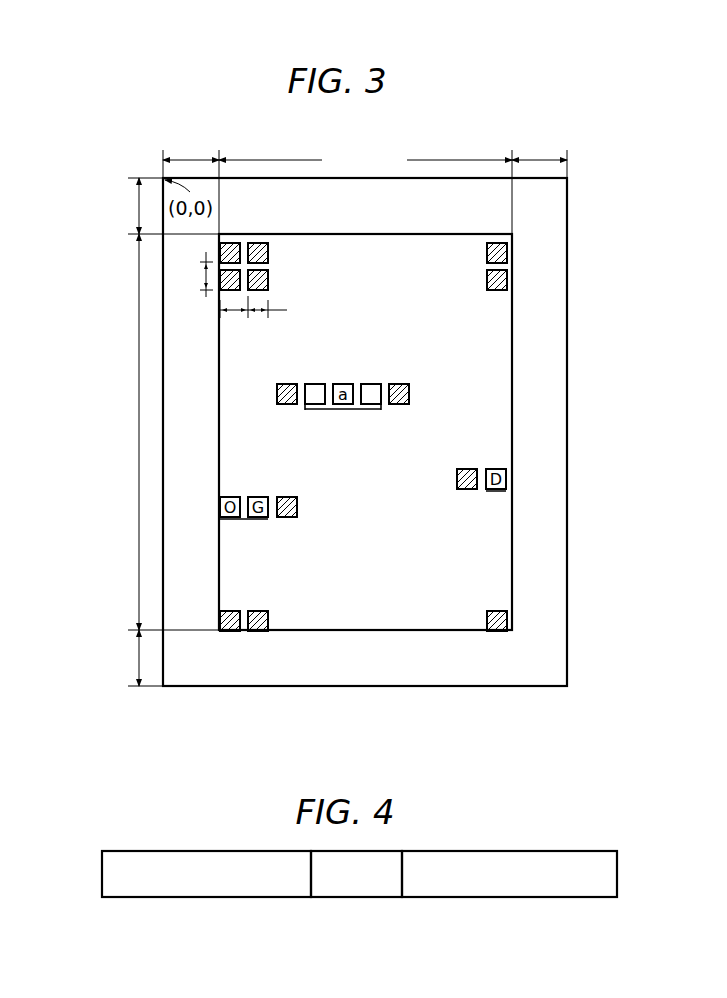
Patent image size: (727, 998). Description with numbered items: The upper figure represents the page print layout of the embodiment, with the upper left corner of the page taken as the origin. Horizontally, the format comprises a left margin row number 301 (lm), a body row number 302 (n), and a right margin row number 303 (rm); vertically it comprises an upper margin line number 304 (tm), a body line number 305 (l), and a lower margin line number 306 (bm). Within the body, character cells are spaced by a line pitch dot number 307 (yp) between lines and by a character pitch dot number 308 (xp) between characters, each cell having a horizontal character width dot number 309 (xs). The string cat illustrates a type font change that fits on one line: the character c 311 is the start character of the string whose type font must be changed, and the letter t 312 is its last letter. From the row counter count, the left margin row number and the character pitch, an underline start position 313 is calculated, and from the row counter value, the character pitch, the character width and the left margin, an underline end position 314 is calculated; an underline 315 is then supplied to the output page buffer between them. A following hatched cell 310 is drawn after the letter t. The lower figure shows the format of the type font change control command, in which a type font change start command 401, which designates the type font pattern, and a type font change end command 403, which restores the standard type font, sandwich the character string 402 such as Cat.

In FIG. 3, the left margin row number 301 is at (190, 158).
In FIG. 3, the body row number 302 is at (365, 160).
In FIG. 3, the right margin row number 303 is at (540, 158).
In FIG. 3, the upper margin line number 304 is at (139, 200).
In FIG. 3, the body line number 305 is at (139, 403).
In FIG. 3, the lower margin line number 306 is at (139, 657).
In FIG. 3, the line pitch dot number 307 is at (206, 276).
In FIG. 3, the character pitch dot number 308 is at (235, 313).
In FIG. 3, the horizontal character width dot number 309 is at (262, 310).
In FIG. 3, the character cell following word 310 is at (383, 408).
In FIG. 3, the character "c" 311 is at (311, 383).
In FIG. 3, the letter "t" 312 is at (366, 383).
In FIG. 3, the underline start position 313 is at (305, 411).
In FIG. 3, the underline end position 314 is at (381, 411).
In FIG. 3, the underline 315 is at (341, 411).
In FIG. 4, the type font change start command 401 is at (181, 898).
In FIG. 4, the character string 402 is at (352, 898).
In FIG. 4, the type font change end command 403 is at (520, 898).